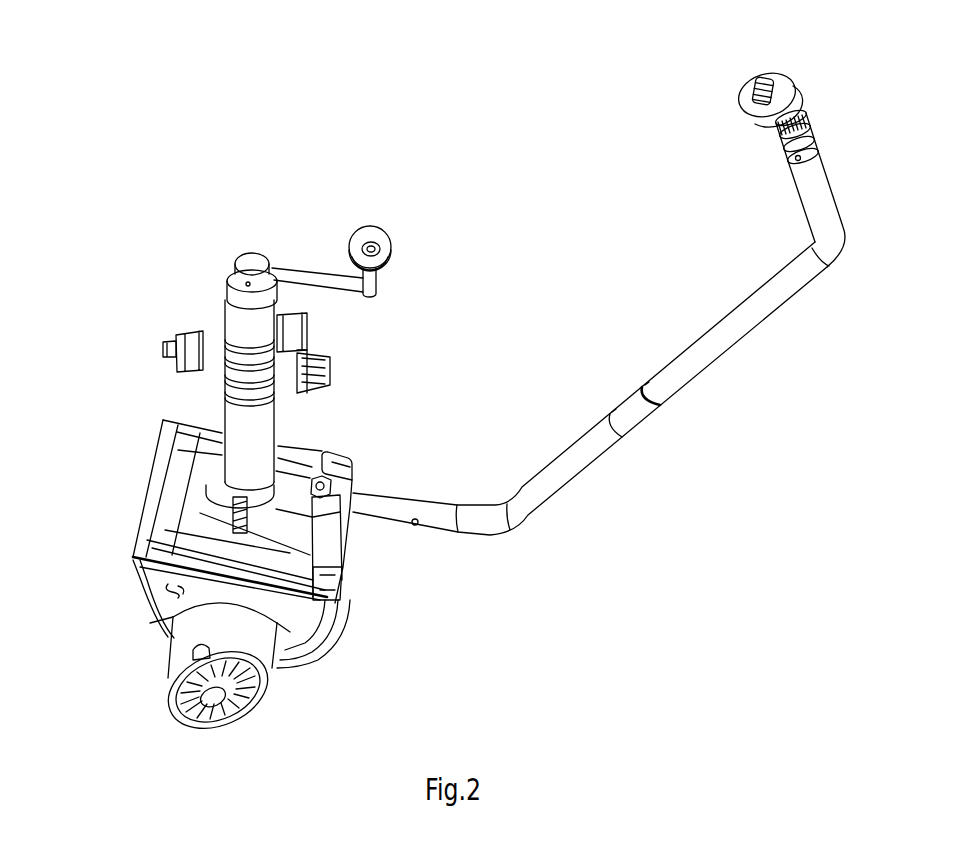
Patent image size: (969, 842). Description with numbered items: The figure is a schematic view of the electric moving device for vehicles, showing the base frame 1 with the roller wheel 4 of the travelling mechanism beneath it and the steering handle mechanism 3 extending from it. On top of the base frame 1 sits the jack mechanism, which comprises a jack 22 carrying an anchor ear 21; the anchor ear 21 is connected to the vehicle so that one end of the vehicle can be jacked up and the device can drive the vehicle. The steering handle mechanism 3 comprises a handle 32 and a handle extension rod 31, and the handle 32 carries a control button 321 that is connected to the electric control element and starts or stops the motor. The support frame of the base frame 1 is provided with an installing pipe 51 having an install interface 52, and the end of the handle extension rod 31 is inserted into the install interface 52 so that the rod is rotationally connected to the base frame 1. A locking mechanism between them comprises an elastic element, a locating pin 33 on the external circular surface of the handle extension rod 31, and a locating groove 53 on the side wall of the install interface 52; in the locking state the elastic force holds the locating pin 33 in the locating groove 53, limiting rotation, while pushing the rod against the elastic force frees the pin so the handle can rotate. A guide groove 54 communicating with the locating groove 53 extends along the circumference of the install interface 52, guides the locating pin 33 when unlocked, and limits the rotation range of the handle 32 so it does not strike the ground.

The base frame 1 is at (205, 537).
The steering handle mechanism 3 is at (599, 283).
The roller wheel 4 is at (150, 617).
The anchor ear 21 is at (172, 340).
The jack 22 is at (258, 315).
The handle extension rod 31 is at (670, 382).
The handle 32 is at (783, 135).
The locating pin 33 is at (350, 463).
The installing pipe 51 is at (300, 515).
The install interface 52 is at (350, 517).
The locating groove 53 is at (350, 480).
The guide groove 54 is at (330, 462).
The control button 321 is at (753, 83).